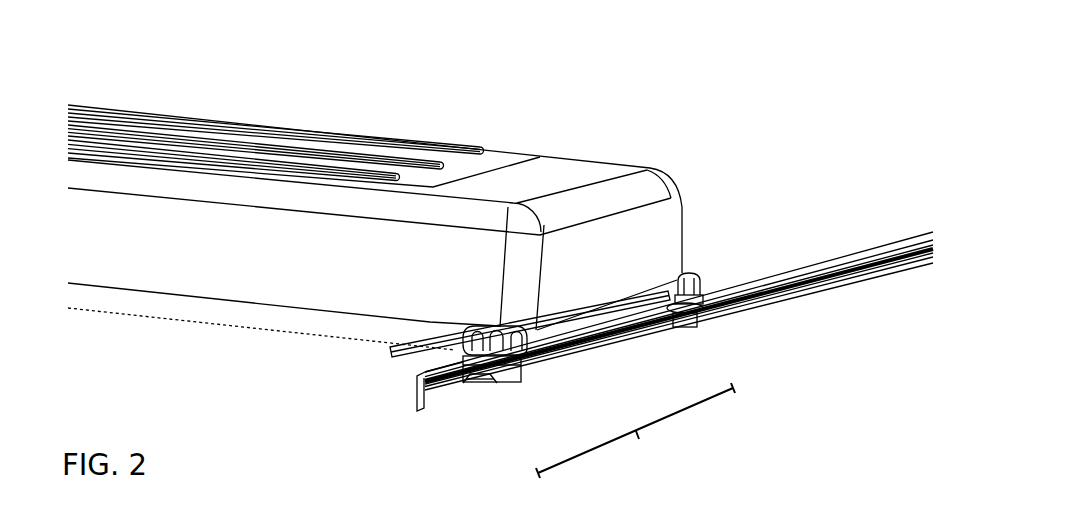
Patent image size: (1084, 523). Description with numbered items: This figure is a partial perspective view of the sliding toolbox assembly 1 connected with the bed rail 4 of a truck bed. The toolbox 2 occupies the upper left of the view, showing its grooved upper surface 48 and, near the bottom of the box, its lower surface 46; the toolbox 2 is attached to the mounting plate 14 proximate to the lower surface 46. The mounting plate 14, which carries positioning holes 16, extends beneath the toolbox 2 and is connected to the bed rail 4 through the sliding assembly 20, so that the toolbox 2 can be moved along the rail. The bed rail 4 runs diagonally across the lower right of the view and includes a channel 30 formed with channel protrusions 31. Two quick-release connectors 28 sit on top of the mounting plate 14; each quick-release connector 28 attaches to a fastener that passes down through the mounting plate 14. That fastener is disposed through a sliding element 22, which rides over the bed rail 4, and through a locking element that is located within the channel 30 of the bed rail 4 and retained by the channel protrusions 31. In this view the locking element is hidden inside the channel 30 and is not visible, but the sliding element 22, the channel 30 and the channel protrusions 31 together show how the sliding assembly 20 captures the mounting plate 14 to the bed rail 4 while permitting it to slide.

The sliding toolbox assembly 1 is at (402, 64).
The toolbox 2 is at (288, 298).
The bed rail 4 is at (817, 287).
The mounting plate 14 is at (390, 350).
The positioning holes 16 is at (430, 357).
The sliding assembly 20 is at (635, 430).
The sliding element 22 is at (520, 383).
The quick-release connector 28 is at (703, 290).
The channel 30 is at (467, 387).
The channel protrusions 31 is at (462, 382).
The lower surface 46 is at (170, 341).
The upper surface 48 is at (611, 151).